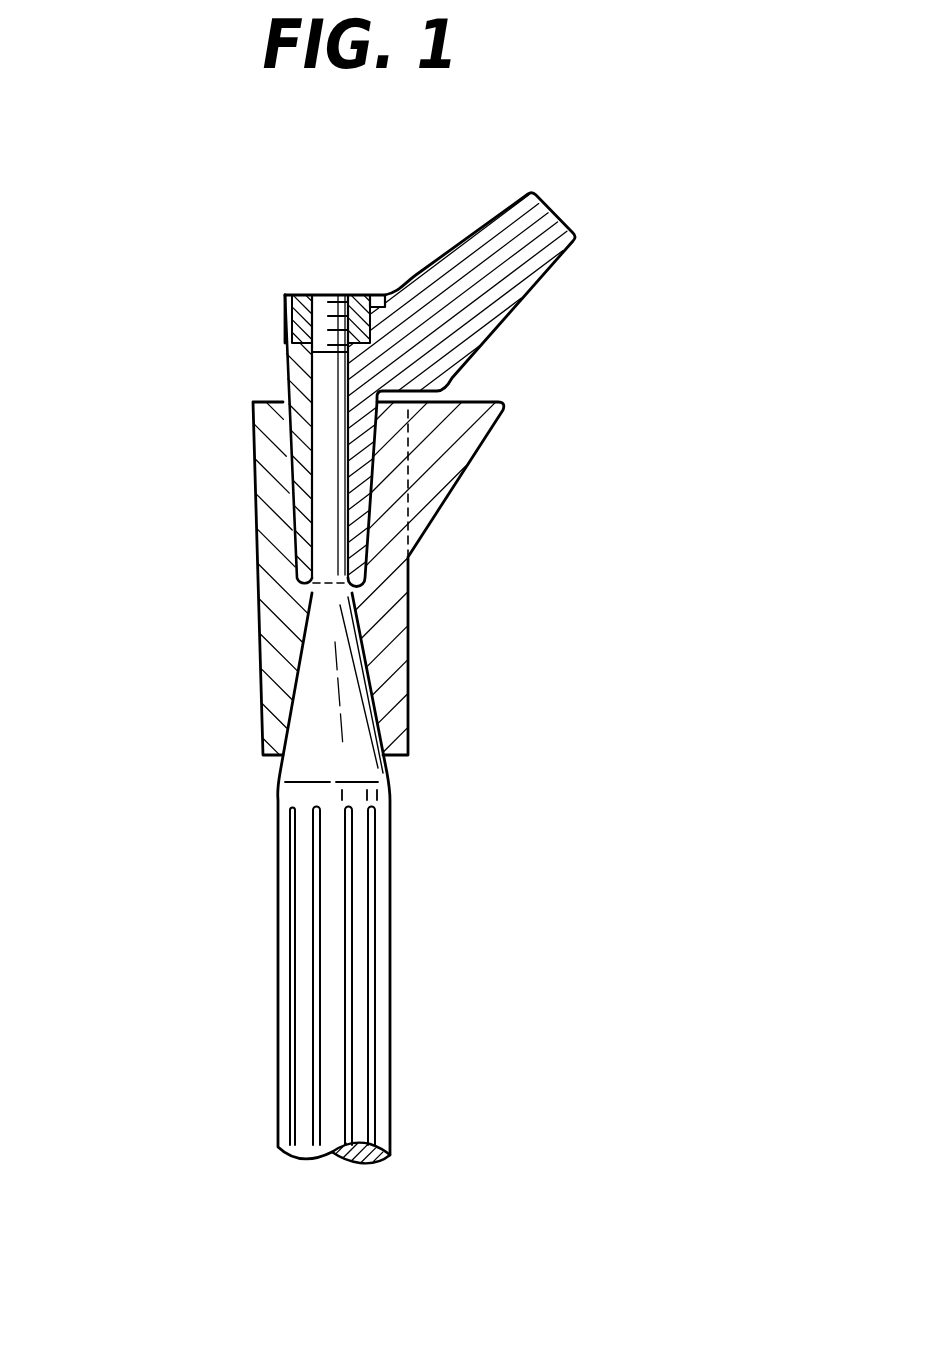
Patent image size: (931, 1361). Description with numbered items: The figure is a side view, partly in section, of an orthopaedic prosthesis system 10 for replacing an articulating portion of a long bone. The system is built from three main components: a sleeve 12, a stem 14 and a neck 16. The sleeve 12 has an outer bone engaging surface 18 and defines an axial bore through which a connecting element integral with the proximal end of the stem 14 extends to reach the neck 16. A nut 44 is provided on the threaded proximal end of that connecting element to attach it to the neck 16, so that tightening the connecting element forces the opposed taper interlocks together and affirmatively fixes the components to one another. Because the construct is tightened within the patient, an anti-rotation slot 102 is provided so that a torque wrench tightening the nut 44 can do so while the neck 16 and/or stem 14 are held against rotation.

The orthopaedic prosthesis system 10 is at (163, 345).
The sleeve 12 is at (260, 588).
The stem 14 is at (388, 812).
The neck 16 is at (490, 345).
The outer bone engaging surface 18 is at (427, 530).
The nut 44 is at (302, 305).
The anti-rotation slot 102 is at (283, 297).